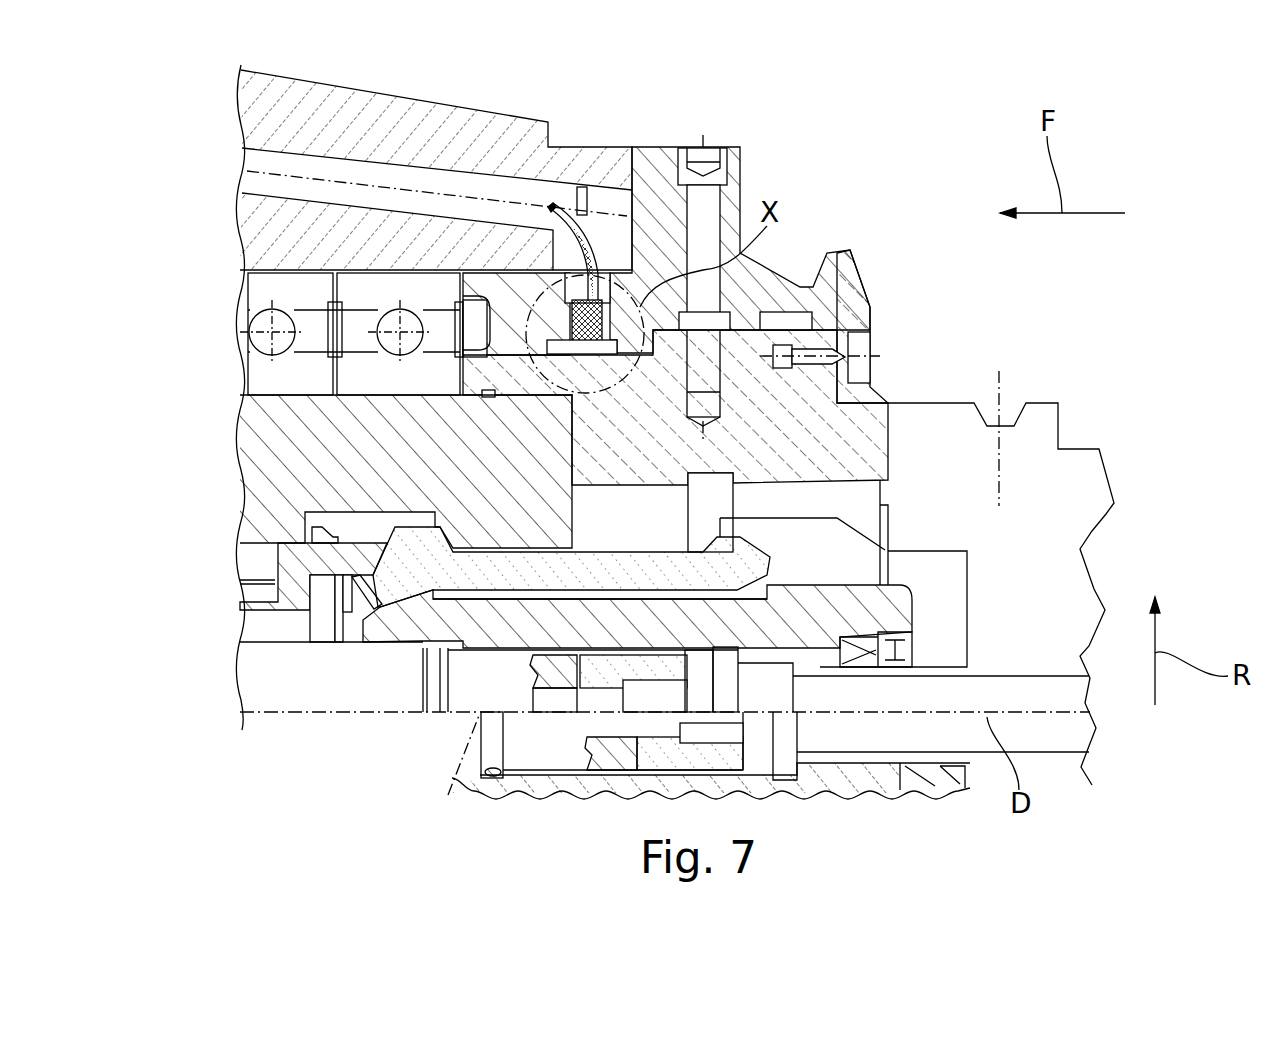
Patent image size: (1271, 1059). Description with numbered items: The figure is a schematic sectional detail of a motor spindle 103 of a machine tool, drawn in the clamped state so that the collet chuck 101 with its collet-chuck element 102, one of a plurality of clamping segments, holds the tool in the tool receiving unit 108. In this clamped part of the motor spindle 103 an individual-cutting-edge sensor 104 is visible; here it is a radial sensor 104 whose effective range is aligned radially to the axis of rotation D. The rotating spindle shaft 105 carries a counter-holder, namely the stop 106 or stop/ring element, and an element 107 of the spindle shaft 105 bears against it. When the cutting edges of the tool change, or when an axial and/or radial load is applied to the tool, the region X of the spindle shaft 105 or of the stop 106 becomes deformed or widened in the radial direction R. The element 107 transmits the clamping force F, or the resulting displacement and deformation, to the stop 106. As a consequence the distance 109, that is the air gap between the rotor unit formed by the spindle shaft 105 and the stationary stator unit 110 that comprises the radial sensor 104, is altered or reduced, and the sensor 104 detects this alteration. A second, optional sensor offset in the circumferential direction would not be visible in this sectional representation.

The collet chuck 101 is at (795, 553).
The collet-chuck element 102 is at (645, 580).
The motor spindle 103 is at (235, 378).
The sensor 104 is at (597, 258).
The spindle shaft 105 is at (235, 533).
The stop 106 is at (787, 428).
The element 107 is at (256, 434).
The tool receiving unit 108 is at (981, 599).
The distance 109 is at (510, 300).
The stator unit 110 is at (256, 106).